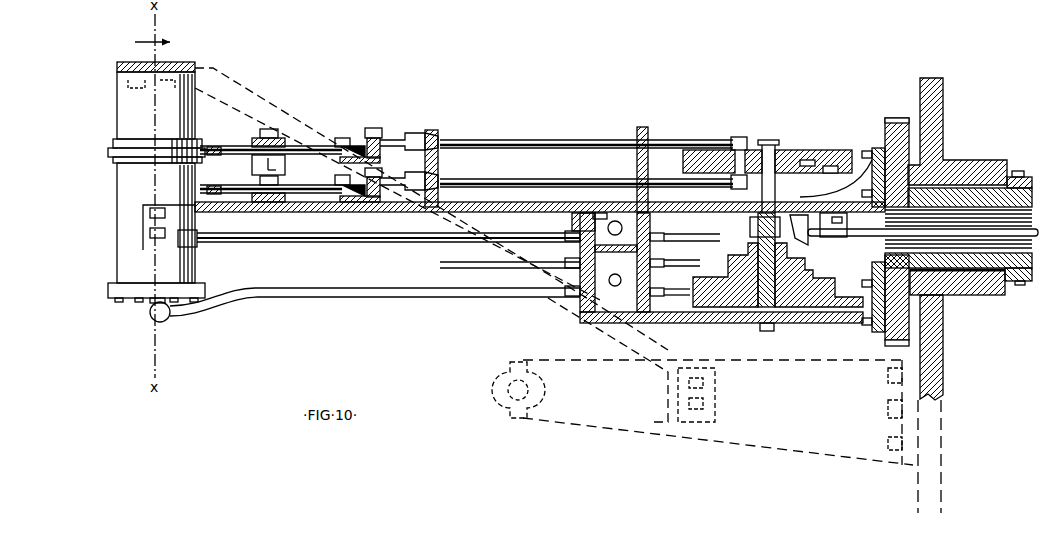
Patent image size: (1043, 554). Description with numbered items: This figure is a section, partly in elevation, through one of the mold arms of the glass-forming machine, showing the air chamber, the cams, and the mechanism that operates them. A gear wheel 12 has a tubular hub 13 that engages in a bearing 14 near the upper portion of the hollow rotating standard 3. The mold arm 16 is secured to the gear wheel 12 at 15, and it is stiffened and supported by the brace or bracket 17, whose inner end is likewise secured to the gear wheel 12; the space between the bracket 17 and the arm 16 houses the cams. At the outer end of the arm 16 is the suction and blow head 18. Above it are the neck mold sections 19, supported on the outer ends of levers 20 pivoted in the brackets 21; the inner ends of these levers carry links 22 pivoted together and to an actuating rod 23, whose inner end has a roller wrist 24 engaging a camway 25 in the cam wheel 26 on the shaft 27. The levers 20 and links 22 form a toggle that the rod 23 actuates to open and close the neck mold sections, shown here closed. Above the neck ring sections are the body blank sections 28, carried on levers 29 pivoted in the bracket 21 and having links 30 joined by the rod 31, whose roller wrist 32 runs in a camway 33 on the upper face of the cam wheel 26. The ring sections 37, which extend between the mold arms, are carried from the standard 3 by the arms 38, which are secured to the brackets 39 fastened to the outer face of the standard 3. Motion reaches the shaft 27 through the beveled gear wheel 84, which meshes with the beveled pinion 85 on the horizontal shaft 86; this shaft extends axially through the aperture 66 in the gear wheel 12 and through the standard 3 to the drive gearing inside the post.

The standard 3 is at (940, 93).
The gear wheel 12 is at (896, 142).
The tubular hub 13 is at (942, 200).
The bearing 14 is at (975, 296).
The securing point 15 is at (877, 156).
The mold arm 16 is at (228, 211).
The brace or bracket 17 is at (813, 318).
The suction and blow head 18 is at (126, 248).
The neck mold sections 19 is at (116, 178).
The levers 20 is at (300, 192).
The brackets 21 is at (262, 182).
The links 22 is at (355, 172).
The actuating rod 23 is at (458, 177).
The roller wrist 24 is at (740, 168).
The camway 25 is at (824, 175).
The cam wheel 26 is at (830, 148).
The shaft 27 is at (768, 148).
The body blank sections 28 is at (140, 104).
The levers 29 is at (236, 152).
The links 30 is at (362, 150).
The rod 31 is at (477, 140).
The roller wrist 32 is at (732, 150).
The camway 33 is at (808, 158).
The ring sections 37 is at (150, 64).
The arms 38 is at (214, 94).
The brackets 39 is at (756, 412).
The aperture 66 is at (974, 222).
The beveled gear wheel 84 is at (752, 216).
The beveled pinion 85 is at (806, 228).
The shaft 86 is at (1012, 284).